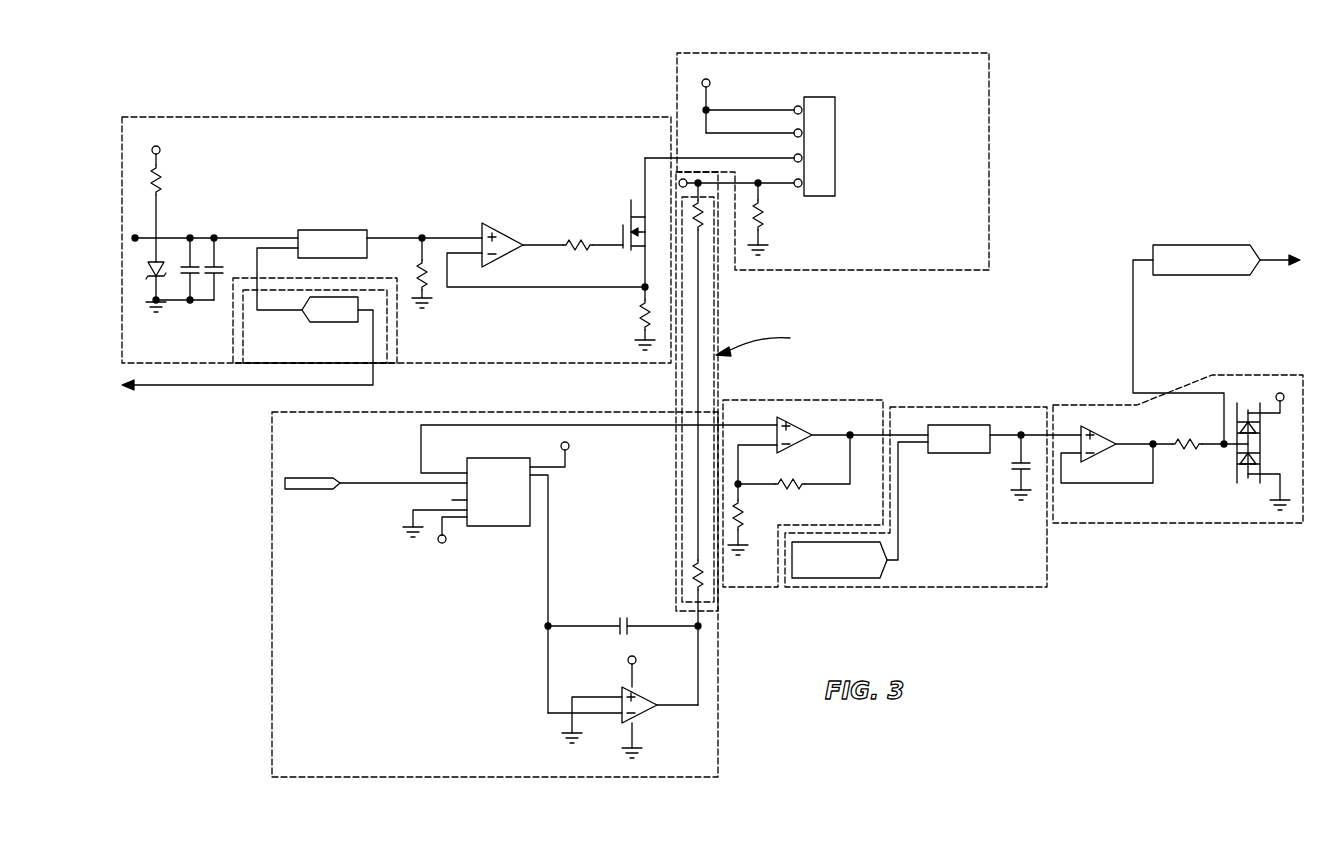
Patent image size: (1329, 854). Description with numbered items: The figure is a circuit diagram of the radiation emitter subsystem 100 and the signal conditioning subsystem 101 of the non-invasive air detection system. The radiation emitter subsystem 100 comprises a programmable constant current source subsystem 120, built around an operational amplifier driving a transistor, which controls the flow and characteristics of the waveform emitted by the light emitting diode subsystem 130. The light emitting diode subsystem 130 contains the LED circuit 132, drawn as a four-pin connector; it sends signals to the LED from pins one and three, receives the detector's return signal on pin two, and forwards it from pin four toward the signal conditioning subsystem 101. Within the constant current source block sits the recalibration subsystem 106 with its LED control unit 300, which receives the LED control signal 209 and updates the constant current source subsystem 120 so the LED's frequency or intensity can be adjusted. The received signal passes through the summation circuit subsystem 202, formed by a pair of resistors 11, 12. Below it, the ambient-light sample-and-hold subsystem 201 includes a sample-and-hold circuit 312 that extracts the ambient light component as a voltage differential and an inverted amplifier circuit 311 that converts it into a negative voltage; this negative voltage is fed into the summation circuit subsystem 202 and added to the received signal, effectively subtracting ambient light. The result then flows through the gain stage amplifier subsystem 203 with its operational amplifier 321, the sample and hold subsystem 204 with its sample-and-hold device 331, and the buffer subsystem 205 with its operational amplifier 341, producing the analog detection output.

The radiation emitter subsystem 100 is at (578, 66).
The constant current source subsystem 120 is at (190, 115).
The light emitting diode subsystem 130 is at (990, 85).
The LED circuit 132 is at (838, 157).
The LED control unit 300 is at (320, 297).
The recalibration subsystem 106 is at (258, 366).
The LED control signal 209 is at (200, 388).
The resistor 12 is at (703, 232).
The summation circuit subsystem 202 is at (717, 328).
The resistor 11 is at (705, 590).
The signal conditioning subsystem 101 is at (935, 352).
The ambient-light sample-and-hold subsystem 201 is at (272, 480).
The sample-and-hold circuit 312 is at (498, 527).
The inverted amplifier circuit 311 is at (616, 594).
The gain stage amplifier subsystem 203 is at (795, 400).
The operational amplifier 321 is at (800, 432).
The sample and hold subsystem 204 is at (968, 407).
The sample and hold device 331 is at (970, 455).
The buffer subsystem 205 is at (1240, 375).
The operational amplifier 341 is at (1100, 437).